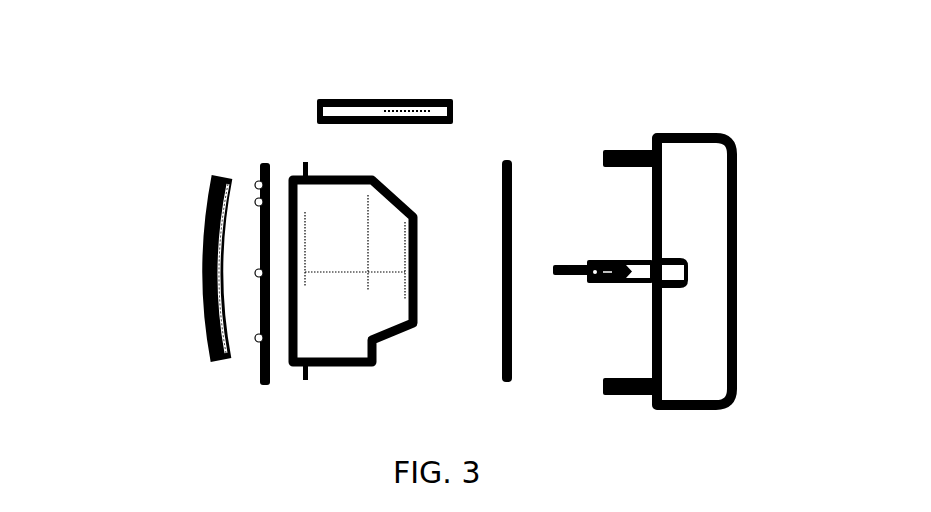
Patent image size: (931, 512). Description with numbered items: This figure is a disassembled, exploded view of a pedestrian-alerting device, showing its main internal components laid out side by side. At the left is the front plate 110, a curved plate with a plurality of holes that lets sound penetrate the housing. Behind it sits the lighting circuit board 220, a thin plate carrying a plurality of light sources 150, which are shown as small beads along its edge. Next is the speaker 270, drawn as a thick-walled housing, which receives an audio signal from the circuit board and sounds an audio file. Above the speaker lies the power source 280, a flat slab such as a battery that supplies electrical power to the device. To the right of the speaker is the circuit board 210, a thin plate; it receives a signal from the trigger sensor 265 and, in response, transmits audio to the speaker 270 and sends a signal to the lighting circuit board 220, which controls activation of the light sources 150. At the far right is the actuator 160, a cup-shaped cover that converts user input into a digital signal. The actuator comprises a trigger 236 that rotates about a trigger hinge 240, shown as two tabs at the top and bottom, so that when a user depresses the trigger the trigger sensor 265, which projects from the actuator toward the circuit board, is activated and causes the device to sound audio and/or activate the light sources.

The front plate 110 is at (190, 257).
The light sources 150 is at (250, 192).
The actuator 160 is at (725, 215).
The circuit board 210 is at (497, 320).
The lighting circuit board 220 is at (252, 237).
The trigger 236 is at (700, 188).
The trigger hinge 240 is at (617, 142).
The trigger sensor 265 is at (590, 255).
The speaker 270 is at (323, 218).
The power source 280 is at (348, 95).